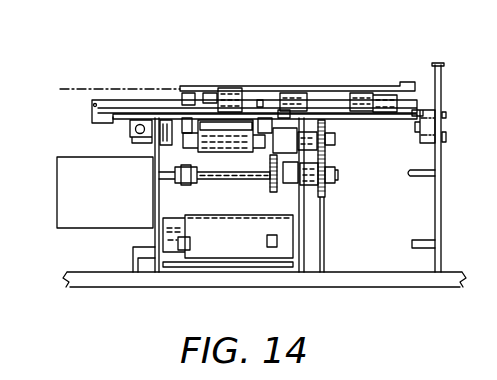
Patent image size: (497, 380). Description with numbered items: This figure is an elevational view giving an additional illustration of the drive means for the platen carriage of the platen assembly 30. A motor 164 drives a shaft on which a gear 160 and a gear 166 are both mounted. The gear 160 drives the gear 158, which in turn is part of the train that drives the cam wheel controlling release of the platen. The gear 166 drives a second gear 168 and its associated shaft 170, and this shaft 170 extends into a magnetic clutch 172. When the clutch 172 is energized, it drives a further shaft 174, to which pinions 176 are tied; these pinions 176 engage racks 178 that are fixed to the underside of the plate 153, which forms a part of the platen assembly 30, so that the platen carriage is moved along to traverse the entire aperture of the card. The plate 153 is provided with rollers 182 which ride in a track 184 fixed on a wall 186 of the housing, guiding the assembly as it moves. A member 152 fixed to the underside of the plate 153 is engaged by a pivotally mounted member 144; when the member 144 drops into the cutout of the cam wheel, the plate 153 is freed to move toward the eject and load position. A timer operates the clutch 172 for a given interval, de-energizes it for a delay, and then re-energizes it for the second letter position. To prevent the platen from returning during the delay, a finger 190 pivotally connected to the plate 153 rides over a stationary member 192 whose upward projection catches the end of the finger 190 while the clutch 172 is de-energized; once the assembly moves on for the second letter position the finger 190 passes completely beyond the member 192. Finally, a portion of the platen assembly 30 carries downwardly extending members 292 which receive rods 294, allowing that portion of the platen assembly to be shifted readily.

The platen assembly 30 is at (195, 74).
The pivotally mounted member 144 is at (325, 126).
The associated member 152 is at (313, 118).
The plate 153 is at (122, 123).
The gear 158 is at (278, 183).
The gear 160 is at (278, 193).
The motor 164 is at (114, 199).
The gear 166 is at (332, 183).
The second gear 168 is at (330, 154).
The shaft 170 is at (328, 141).
The magnetic clutch 172 is at (278, 127).
The shaft 174 is at (211, 97).
The pinions 176 is at (262, 153).
The racks 178 is at (186, 118).
The rollers 182 is at (442, 128).
The track 184 is at (430, 113).
The wall 186 is at (433, 70).
The finger 190 is at (173, 116).
The stationary member 192 is at (157, 145).
The downwardly extending members 292 is at (233, 100).
The rods 294 is at (117, 103).